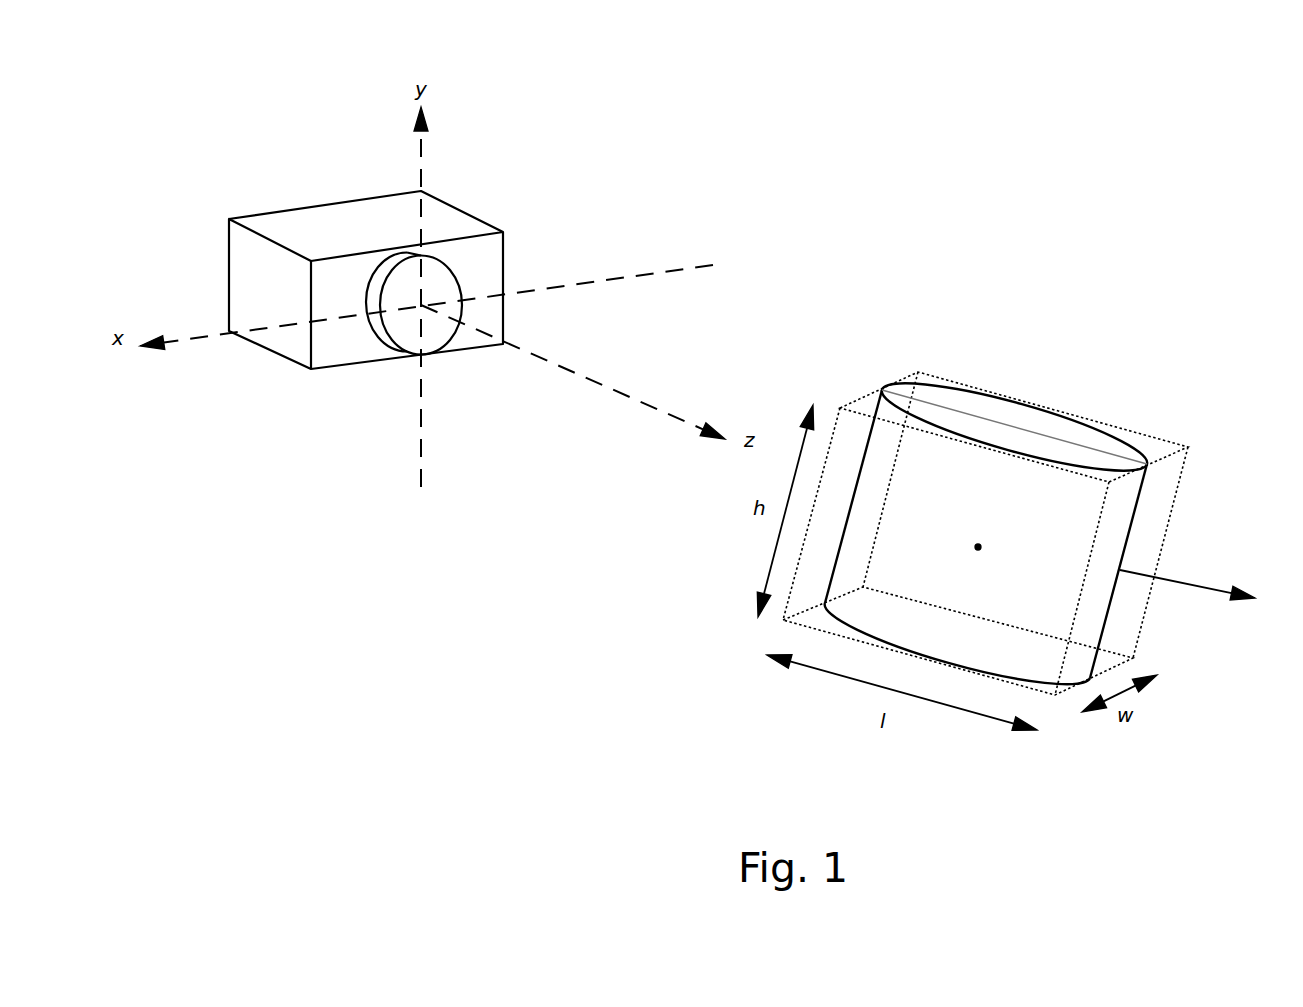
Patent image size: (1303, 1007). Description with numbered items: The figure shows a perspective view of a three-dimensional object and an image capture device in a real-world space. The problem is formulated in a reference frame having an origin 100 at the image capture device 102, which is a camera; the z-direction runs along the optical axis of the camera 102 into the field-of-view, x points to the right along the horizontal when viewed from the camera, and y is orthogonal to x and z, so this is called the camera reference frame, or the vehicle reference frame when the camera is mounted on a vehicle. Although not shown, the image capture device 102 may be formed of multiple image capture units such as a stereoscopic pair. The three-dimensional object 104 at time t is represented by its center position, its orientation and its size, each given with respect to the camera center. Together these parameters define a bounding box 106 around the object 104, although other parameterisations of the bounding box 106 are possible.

The origin 100 is at (421, 306).
The image capture device 102 is at (463, 223).
The 3D object 104 is at (995, 400).
The bounding box 106 is at (1150, 437).